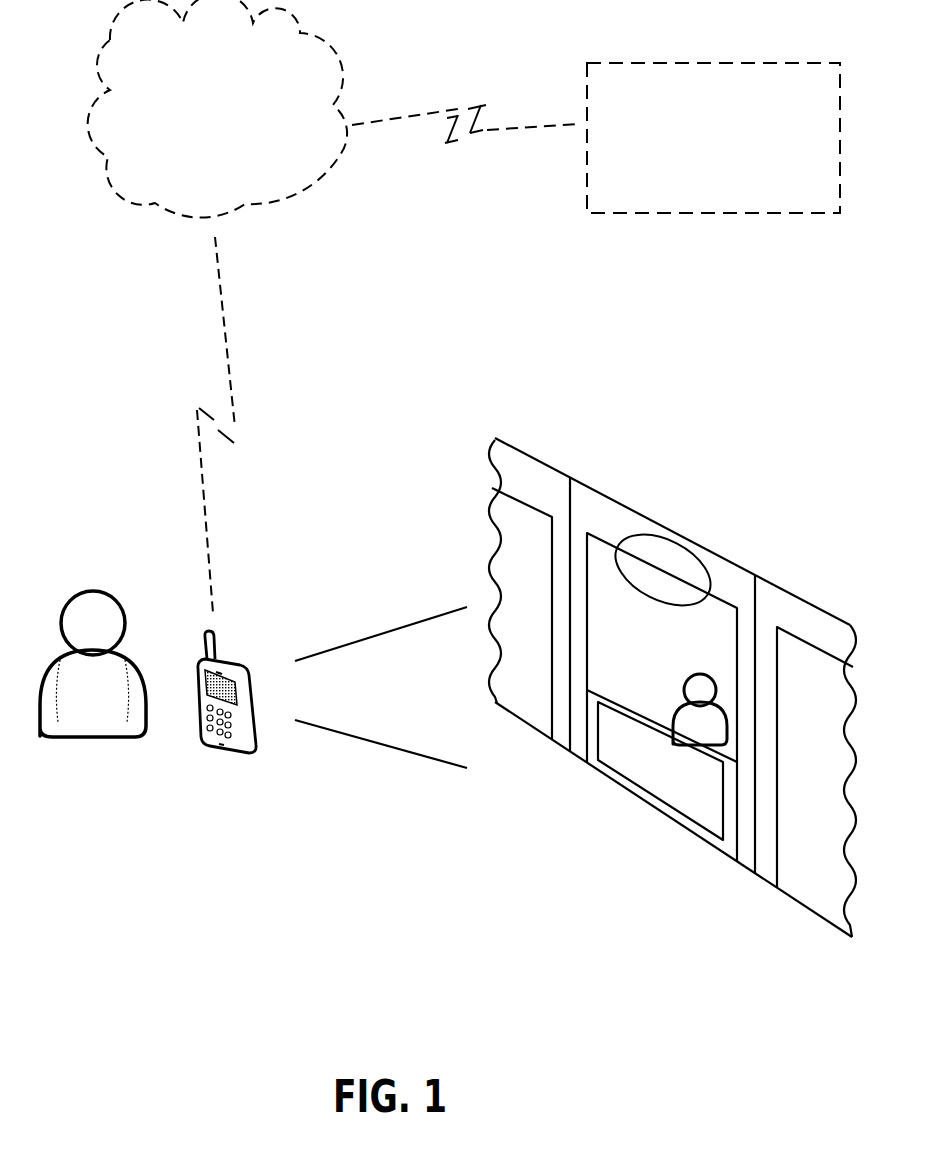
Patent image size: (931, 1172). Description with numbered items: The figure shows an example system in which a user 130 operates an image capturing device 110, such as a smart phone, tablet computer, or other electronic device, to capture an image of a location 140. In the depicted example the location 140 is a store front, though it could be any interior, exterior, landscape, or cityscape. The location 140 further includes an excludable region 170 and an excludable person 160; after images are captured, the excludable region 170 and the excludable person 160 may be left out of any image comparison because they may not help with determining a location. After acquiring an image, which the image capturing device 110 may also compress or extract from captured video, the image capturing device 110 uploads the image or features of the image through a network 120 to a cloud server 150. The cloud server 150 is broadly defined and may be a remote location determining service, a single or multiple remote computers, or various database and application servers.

The image capturing device 110 is at (240, 762).
The network 120 is at (243, 121).
The user 130 is at (98, 738).
The location 140 is at (682, 582).
The cloud server 150 is at (695, 164).
The excludable person 160 is at (683, 683).
The excludable region 170 is at (640, 778).